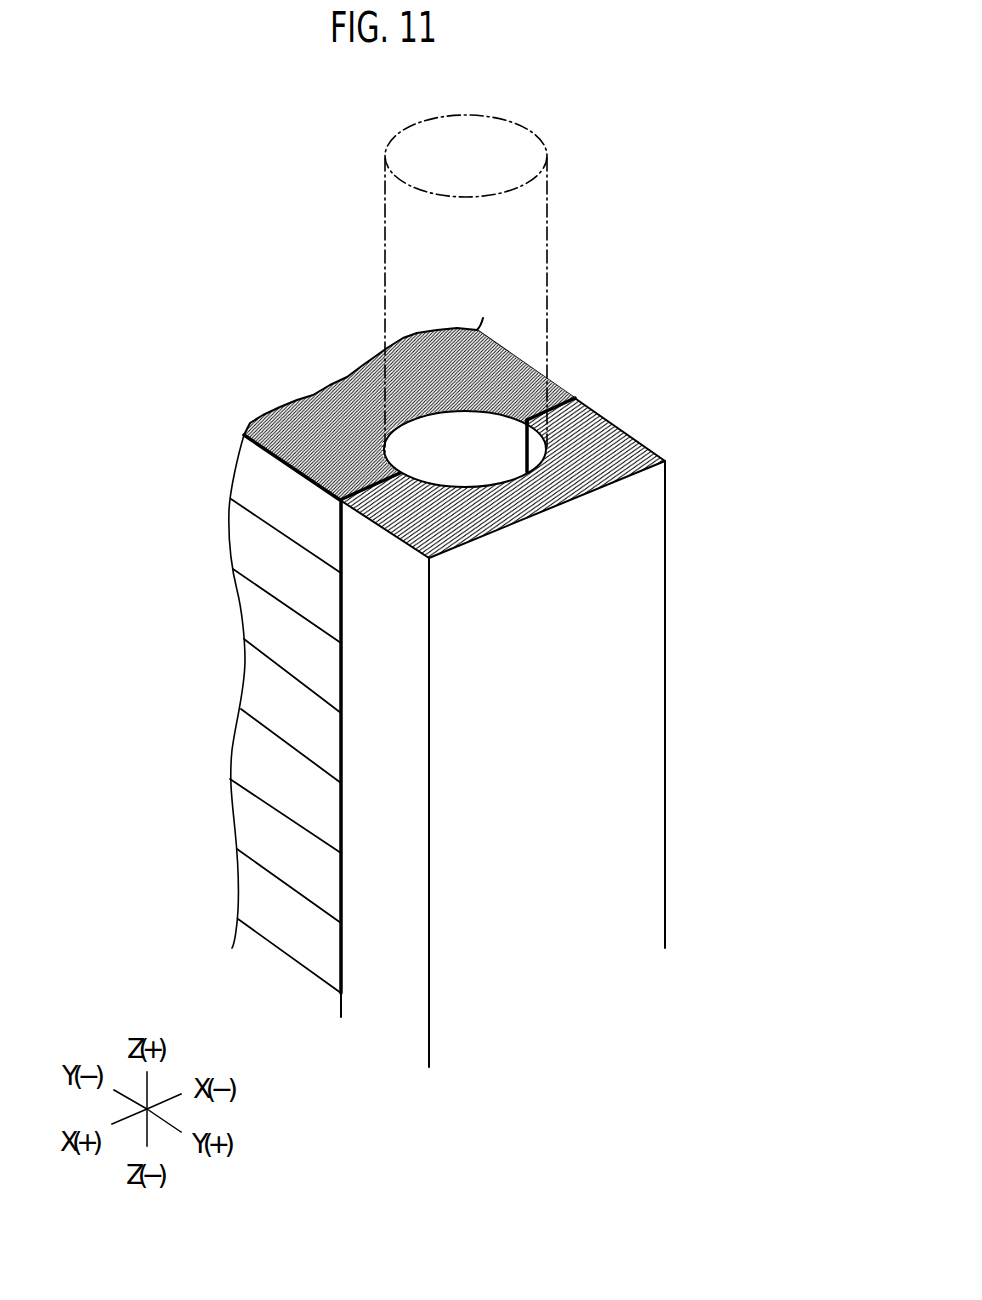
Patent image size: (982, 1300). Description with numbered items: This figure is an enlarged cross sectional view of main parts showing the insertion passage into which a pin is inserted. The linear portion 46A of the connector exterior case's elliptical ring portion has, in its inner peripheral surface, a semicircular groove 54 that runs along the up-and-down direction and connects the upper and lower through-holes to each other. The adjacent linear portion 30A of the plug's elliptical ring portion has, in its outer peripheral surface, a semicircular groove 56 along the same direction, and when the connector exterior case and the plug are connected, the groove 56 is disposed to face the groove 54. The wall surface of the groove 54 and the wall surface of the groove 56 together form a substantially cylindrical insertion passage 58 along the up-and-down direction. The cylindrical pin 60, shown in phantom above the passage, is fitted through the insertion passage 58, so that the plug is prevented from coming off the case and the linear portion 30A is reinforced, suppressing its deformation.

The linear portion 30A is at (280, 500).
The linear portion 46A is at (607, 682).
The semicircular groove 54 is at (495, 485).
The semicircular groove 56 is at (436, 410).
The insertion passage 58 is at (474, 459).
The pin 60 is at (548, 212).